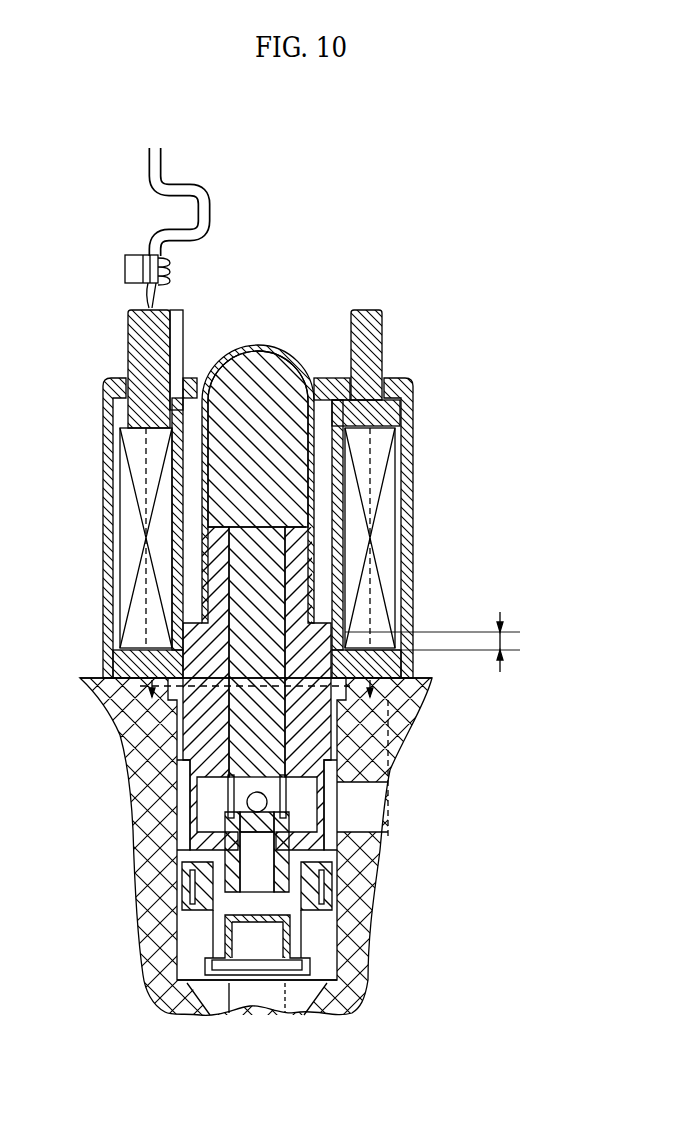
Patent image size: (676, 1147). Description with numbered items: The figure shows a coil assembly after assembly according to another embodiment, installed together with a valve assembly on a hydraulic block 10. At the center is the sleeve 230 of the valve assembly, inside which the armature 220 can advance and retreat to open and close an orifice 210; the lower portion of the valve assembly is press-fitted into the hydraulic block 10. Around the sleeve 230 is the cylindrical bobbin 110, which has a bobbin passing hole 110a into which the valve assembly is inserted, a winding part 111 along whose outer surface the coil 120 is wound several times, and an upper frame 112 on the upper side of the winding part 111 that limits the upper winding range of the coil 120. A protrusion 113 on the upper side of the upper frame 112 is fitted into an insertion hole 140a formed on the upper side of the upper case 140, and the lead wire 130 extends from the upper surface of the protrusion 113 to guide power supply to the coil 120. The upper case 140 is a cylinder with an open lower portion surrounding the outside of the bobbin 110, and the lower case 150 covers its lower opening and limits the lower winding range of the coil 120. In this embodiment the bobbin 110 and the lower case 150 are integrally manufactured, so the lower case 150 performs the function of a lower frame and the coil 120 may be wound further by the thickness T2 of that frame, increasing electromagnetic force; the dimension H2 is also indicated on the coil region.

The hydraulic block 10 is at (375, 704).
The bobbin 110 is at (393, 334).
The bobbin passing hole 110a is at (320, 472).
The winding part 111 is at (340, 502).
The upper frame 112 is at (382, 412).
The protrusion 113 is at (143, 351).
The coil 120 is at (380, 532).
The lead wire 130 is at (206, 212).
The upper case 140 is at (410, 443).
The insertion hole 140a is at (400, 386).
The lower case 150 is at (380, 665).
The orifice 210 is at (318, 817).
The armature 220 is at (262, 753).
The sleeve 230 is at (268, 345).
The height H2 is at (370, 598).
The thickness of the lower frame T2 is at (444, 642).